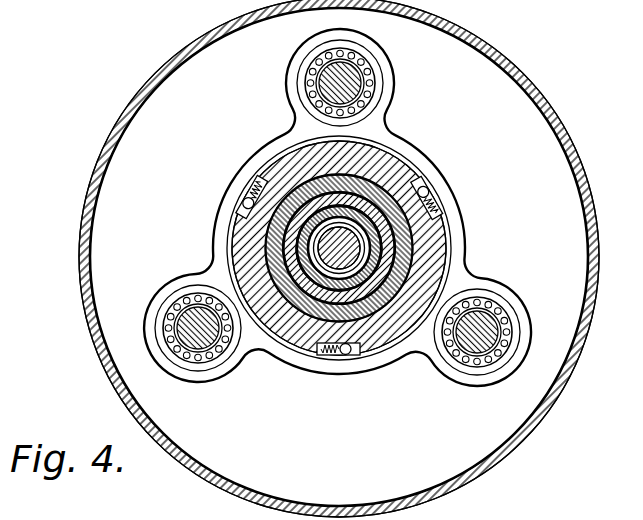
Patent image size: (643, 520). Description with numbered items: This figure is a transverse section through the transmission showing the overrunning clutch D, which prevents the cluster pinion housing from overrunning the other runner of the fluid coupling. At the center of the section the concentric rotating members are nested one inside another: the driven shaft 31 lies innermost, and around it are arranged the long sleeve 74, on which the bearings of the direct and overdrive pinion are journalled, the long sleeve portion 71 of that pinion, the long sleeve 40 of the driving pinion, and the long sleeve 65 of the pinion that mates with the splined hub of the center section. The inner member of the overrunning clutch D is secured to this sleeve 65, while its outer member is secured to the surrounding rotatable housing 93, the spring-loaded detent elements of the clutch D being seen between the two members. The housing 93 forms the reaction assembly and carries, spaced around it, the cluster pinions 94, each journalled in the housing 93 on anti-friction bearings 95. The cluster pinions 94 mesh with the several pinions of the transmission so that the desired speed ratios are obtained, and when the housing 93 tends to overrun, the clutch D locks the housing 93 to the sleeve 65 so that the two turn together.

The rotatable housing 93 is at (576, 128).
The long sleeve 65 is at (287, 160).
The long sleeve 40 is at (273, 237).
The long sleeve portion 71 is at (392, 249).
The long sleeve 74 is at (321, 275).
The driven shaft 31 is at (318, 261).
The anti-friction bearings 95 is at (366, 64).
The cluster pinions 94 is at (361, 91).
The overrunning clutch D is at (247, 200).